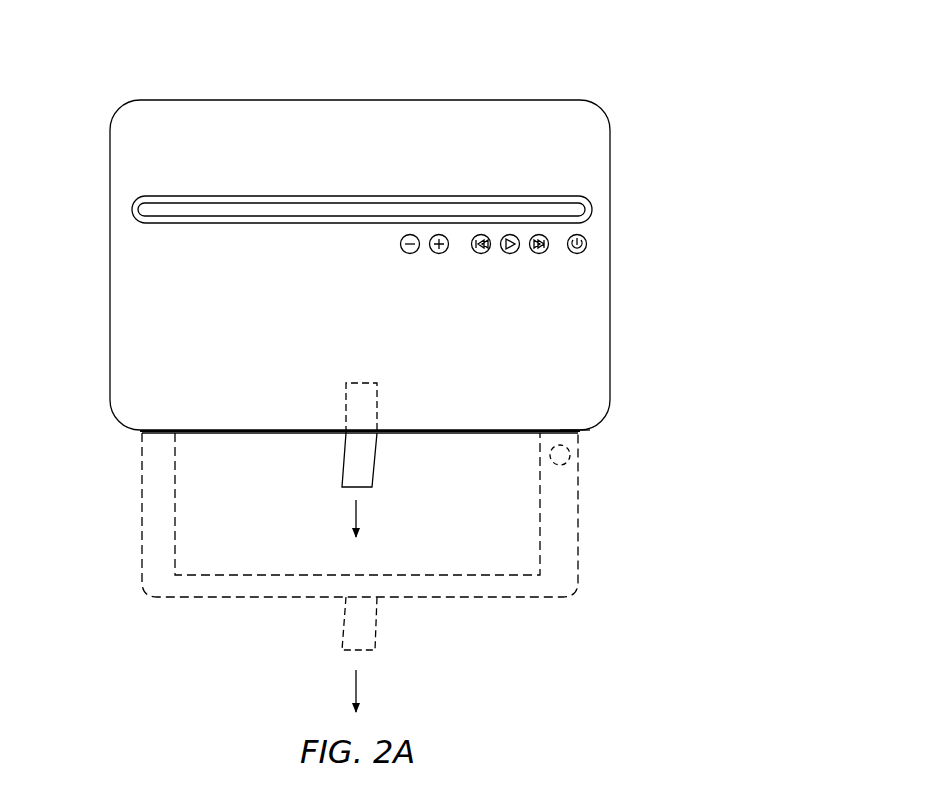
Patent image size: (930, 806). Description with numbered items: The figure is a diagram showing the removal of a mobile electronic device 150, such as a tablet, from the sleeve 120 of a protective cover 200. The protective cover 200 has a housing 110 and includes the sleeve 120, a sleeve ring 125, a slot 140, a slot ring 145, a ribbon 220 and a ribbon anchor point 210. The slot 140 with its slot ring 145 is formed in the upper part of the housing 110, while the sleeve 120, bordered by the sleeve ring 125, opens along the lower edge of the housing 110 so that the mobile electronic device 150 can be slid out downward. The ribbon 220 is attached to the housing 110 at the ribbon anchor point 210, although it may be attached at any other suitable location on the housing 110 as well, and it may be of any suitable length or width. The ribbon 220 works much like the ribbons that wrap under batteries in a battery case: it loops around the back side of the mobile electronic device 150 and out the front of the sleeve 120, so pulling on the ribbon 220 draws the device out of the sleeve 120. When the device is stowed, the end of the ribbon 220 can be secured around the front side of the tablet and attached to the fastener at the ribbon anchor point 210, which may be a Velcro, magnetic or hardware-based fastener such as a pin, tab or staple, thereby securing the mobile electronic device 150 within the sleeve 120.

The protective cover 200 is at (546, 77).
The housing 110 is at (142, 298).
The sleeve 120 is at (242, 445).
The sleeve ring 125 is at (448, 432).
The slot 140 is at (575, 211).
The slot ring 145 is at (562, 197).
The mobile electronic device 150 is at (485, 557).
The ribbon anchor point 210 is at (362, 421).
The ribbon 220 is at (366, 462).